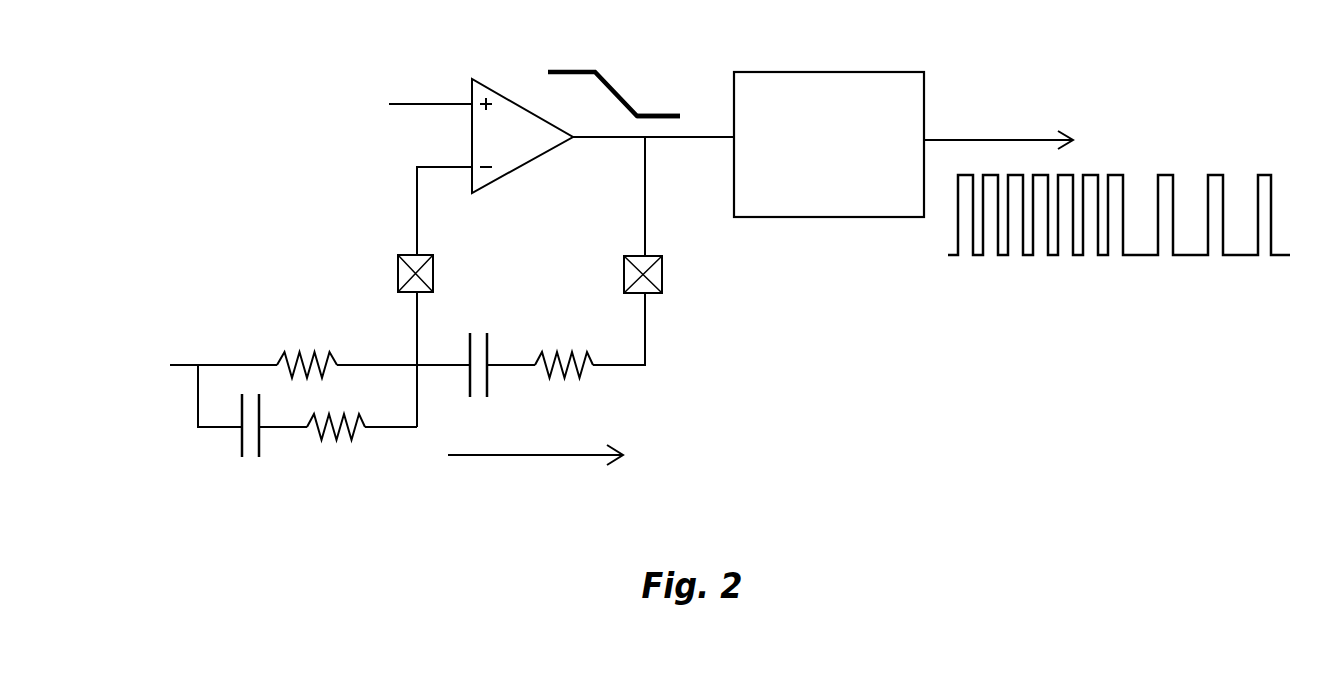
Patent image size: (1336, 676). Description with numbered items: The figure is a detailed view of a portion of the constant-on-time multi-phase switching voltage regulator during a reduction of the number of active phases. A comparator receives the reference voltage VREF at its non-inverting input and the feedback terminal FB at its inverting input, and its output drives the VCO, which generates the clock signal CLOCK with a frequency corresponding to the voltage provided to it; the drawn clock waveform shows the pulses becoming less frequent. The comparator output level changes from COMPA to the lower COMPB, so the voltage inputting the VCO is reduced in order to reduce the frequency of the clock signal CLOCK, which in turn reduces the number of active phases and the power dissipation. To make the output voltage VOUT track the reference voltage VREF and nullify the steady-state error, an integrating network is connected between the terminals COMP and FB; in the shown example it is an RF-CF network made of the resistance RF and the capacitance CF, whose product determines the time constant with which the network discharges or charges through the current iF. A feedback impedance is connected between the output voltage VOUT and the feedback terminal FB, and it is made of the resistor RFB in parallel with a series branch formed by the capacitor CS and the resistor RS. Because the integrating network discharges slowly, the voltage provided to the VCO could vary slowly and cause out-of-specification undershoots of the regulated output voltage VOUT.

The reference voltage VREF is at (399, 88).
The comparator output signal COMPA is at (594, 78).
The comparator output signal COMPB is at (682, 102).
The element VCO is at (829, 144).
The clock signal CLOCK is at (1107, 181).
The feedback terminal FB is at (395, 283).
The COMP terminal COMP is at (604, 282).
The output voltage VOUT is at (136, 363).
The feedback resistor RFB is at (303, 349).
The capacitor CS is at (252, 442).
The resistor RS is at (336, 447).
The capacitance CF is at (473, 384).
The resistance RF is at (564, 386).
The current iF is at (535, 466).